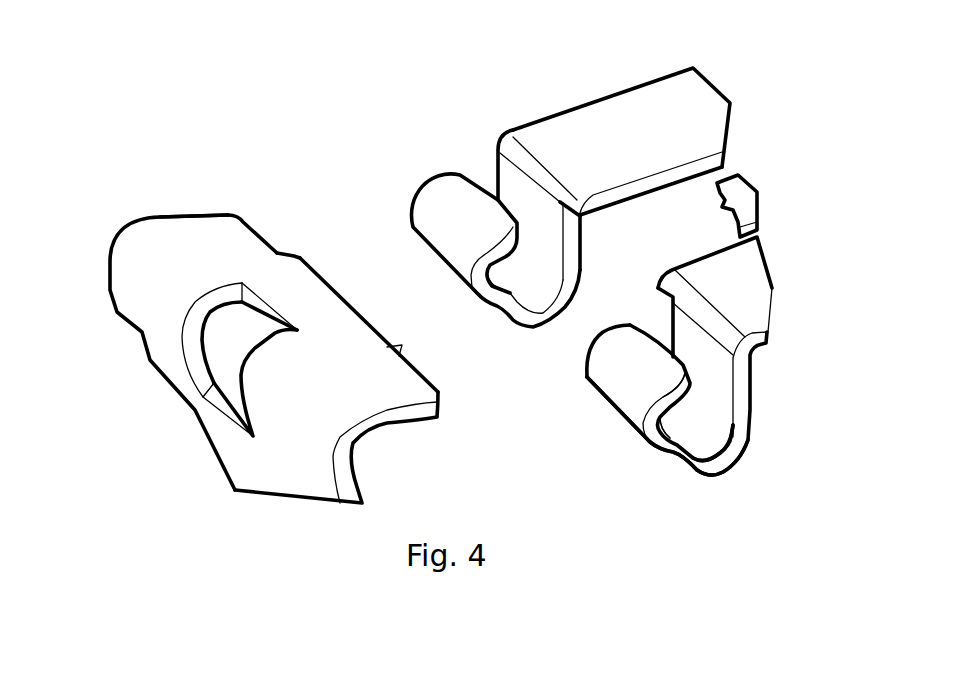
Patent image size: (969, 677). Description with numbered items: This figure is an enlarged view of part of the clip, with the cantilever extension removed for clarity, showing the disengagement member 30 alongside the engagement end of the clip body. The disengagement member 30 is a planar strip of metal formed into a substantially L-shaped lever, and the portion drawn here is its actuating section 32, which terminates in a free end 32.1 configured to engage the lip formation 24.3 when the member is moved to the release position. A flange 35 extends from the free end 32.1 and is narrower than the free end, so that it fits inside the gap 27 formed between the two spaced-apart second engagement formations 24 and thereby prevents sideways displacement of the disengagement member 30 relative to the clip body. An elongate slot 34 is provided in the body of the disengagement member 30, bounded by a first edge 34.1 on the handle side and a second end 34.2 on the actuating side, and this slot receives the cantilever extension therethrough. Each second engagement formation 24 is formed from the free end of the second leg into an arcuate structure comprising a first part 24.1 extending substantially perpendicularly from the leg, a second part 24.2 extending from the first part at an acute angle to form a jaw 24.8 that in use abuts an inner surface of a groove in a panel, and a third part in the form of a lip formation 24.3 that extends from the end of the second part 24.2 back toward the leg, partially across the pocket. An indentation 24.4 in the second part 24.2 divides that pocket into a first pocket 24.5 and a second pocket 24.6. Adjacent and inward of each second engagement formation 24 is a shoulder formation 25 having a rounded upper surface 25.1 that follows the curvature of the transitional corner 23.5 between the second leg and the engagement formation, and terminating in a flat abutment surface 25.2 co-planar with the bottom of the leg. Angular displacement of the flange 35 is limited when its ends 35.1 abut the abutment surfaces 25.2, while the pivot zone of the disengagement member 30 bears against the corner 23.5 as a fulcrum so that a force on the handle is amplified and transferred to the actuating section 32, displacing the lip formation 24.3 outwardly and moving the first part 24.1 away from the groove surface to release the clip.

The disengagement member 30 is at (125, 182).
The actuating section 32 is at (185, 228).
The free end 32.1 is at (253, 230).
The flange 35 is at (345, 310).
The ends of the flange 35.1 is at (298, 256).
The elongate slot 34 is at (260, 308).
The first edge 34.1 is at (230, 410).
The second end 34.2 is at (228, 349).
The corner 23.5 is at (503, 133).
The second engagement formation 24 is at (482, 167).
The shoulder formation 25 is at (592, 190).
The rounded upper surface 25.1 is at (577, 200).
The flat abutment surface 25.2 is at (610, 215).
The gap 27 is at (666, 315).
The first part 24.1 is at (742, 392).
The second part 24.2 is at (694, 465).
The lip formation 24.3 is at (663, 396).
The indentation 24.4 is at (680, 452).
The first pocket 24.5 is at (710, 437).
The second pocket 24.6 is at (675, 421).
The jaw 24.8 is at (718, 478).